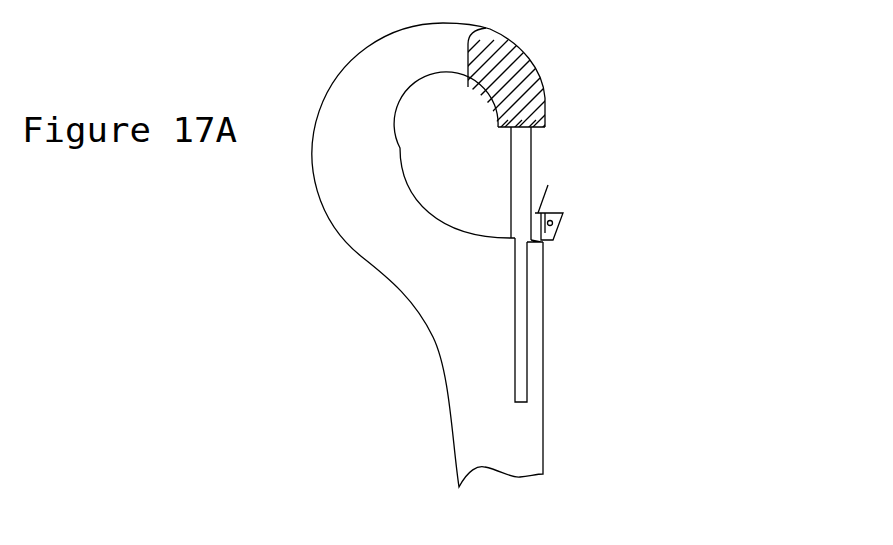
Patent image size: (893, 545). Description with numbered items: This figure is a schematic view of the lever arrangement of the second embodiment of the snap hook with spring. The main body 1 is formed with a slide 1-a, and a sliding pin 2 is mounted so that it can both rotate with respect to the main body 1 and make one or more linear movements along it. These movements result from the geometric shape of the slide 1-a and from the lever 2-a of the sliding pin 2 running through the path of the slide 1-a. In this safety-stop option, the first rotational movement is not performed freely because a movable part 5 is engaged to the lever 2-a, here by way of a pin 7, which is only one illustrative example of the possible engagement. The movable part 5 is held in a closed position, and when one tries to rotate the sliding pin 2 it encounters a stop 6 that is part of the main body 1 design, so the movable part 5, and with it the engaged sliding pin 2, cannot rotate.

The main body 1 is at (367, 165).
The slide 1-a is at (525, 352).
The sliding pin 2 is at (521, 150).
The lever 2-a is at (548, 185).
The movable part 5 is at (560, 233).
The stop 6 is at (543, 248).
The pin 7 is at (553, 223).